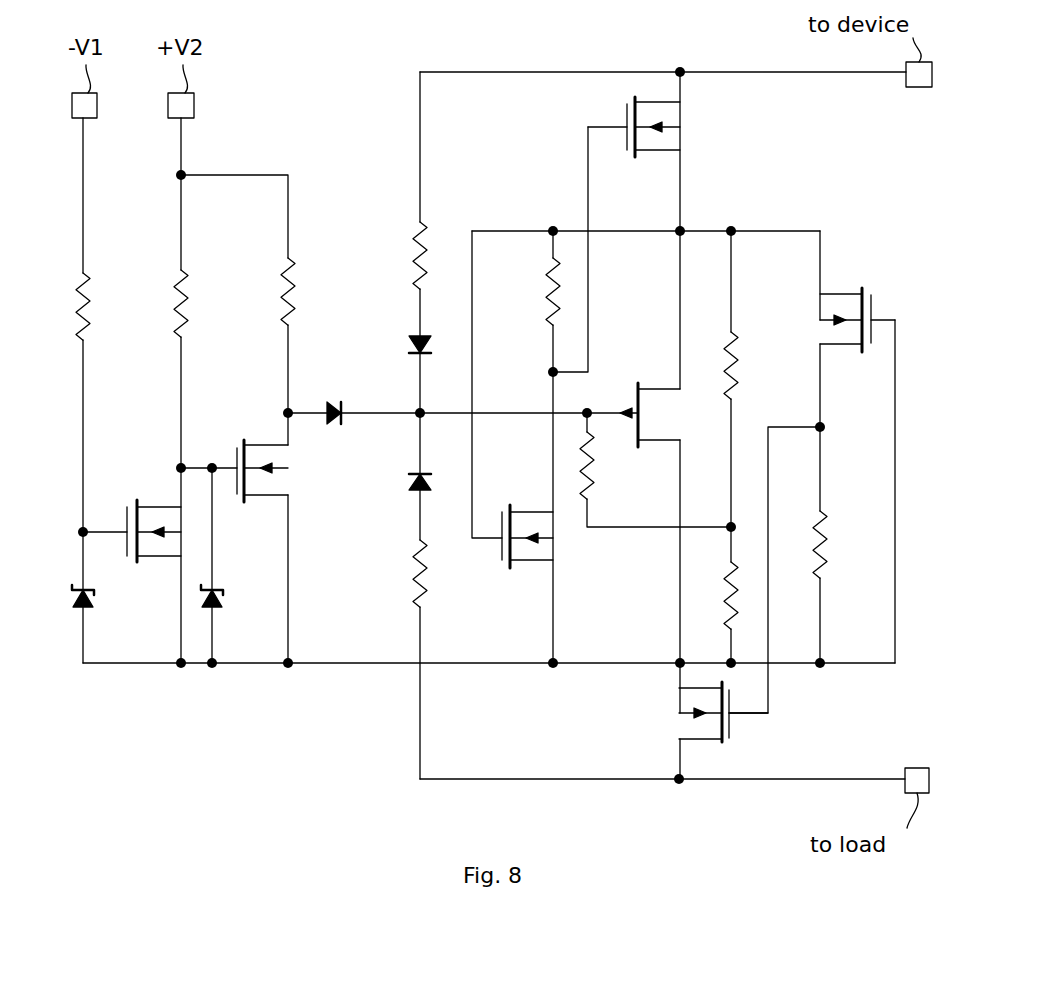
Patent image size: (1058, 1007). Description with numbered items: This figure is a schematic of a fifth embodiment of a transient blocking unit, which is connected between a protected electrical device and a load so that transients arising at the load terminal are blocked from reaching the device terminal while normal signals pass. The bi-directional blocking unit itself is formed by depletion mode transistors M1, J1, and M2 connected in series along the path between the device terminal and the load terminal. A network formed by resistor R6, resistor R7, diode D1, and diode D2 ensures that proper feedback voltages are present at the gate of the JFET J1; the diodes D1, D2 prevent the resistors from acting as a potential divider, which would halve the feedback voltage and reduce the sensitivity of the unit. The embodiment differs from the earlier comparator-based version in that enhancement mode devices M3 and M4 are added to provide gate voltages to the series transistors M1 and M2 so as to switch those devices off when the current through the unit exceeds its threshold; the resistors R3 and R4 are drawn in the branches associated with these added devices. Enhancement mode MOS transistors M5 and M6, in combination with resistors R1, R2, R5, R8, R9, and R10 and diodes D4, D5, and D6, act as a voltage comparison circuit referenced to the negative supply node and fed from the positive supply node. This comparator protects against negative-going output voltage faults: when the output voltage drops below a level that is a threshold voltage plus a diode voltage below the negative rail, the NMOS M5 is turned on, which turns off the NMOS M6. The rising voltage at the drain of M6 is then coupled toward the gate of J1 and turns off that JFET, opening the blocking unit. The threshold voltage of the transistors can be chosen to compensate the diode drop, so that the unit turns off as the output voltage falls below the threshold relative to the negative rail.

The resistor R1 is at (731, 355).
The resistor R2 is at (731, 600).
The resistor R3 is at (553, 290).
The resistor R4 is at (822, 545).
The resistor R5 is at (587, 470).
The resistor R6 is at (420, 255).
The resistor R7 is at (420, 575).
The resistor R8 is at (84, 300).
The resistor R9 is at (182, 300).
The resistor R10 is at (290, 300).
The diode D1 is at (405, 342).
The diode D2 is at (410, 483).
The diode D4 is at (92, 601).
The diode D5 is at (222, 601).
The diode D6 is at (333, 400).
The depletion mode transistor M1 is at (627, 104).
The depletion mode transistor M2 is at (722, 742).
The enhancement mode device M3 is at (510, 568).
The enhancement mode device M4 is at (862, 290).
The enhancement mode MOS transistor M5 is at (137, 500).
The enhancement mode MOS transistor M6 is at (244, 440).
The JFET J1 is at (638, 400).